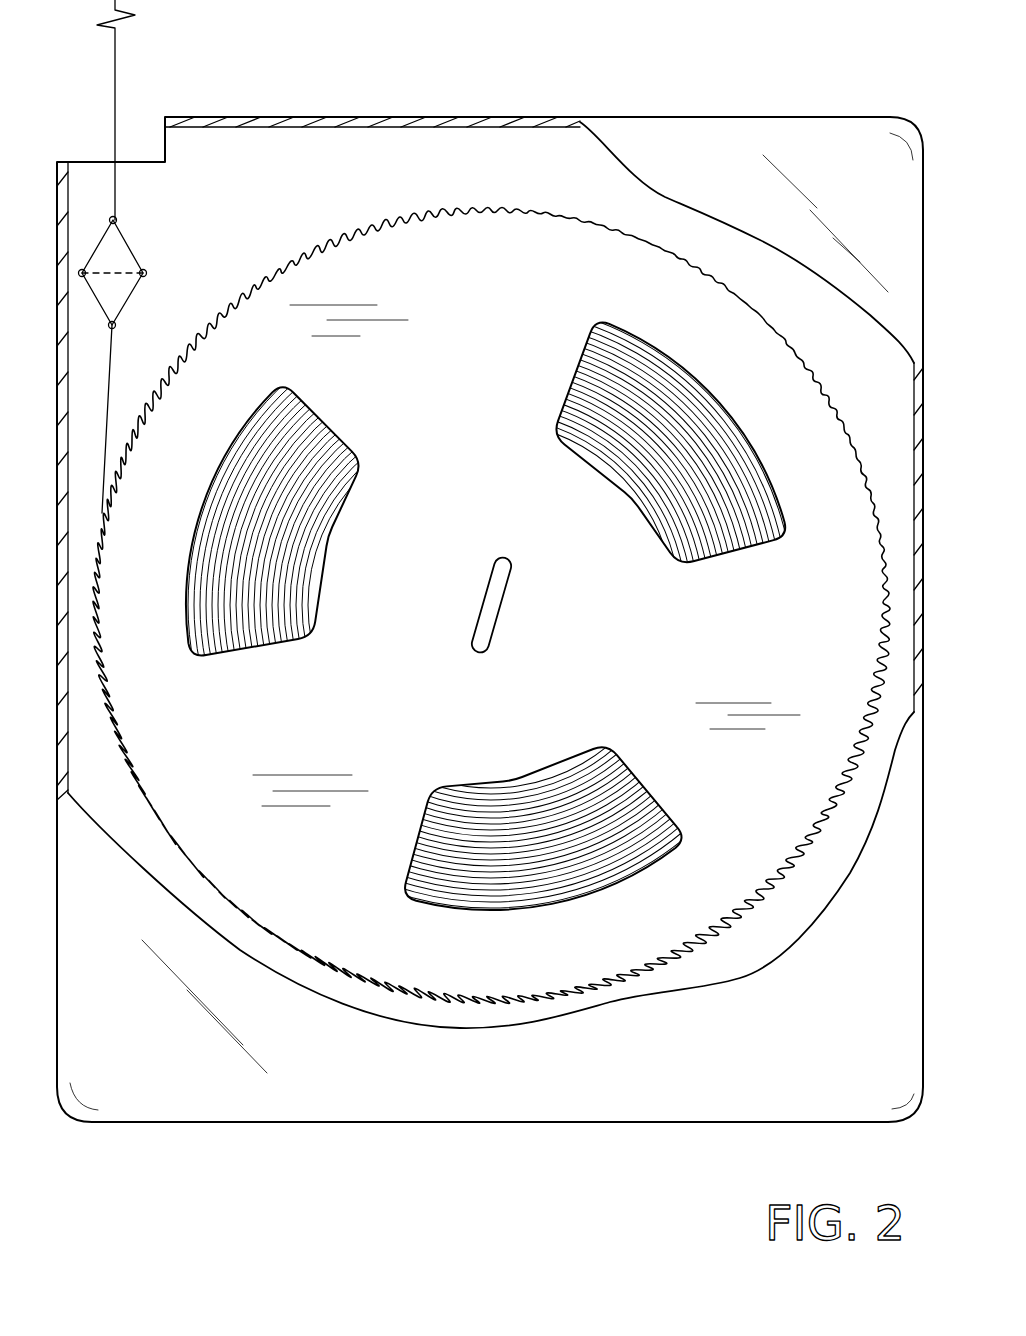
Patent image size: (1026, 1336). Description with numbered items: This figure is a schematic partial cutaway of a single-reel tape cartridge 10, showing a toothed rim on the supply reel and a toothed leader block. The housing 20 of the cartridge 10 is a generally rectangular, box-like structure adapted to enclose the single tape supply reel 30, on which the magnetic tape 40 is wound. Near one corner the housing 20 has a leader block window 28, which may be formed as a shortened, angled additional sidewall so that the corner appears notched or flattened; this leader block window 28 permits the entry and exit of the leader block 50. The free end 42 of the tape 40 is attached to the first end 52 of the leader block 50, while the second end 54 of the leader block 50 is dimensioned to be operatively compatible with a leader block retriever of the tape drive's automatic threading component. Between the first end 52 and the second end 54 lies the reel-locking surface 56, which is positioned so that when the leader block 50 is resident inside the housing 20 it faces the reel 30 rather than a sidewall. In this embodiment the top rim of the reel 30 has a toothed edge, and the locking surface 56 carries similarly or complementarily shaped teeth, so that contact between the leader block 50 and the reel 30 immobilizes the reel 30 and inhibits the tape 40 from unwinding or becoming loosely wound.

The cartridge 10 is at (798, 73).
The housing 20 is at (404, 115).
The leader block window 28 is at (88, 160).
The tape supply reel 30 is at (377, 237).
The magnetic tape 40 is at (116, 66).
The free end 42 is at (112, 367).
The leader block 50 is at (128, 255).
The first end 52 is at (116, 327).
The second end 54 is at (108, 222).
The reel-locking surface 56 is at (148, 278).